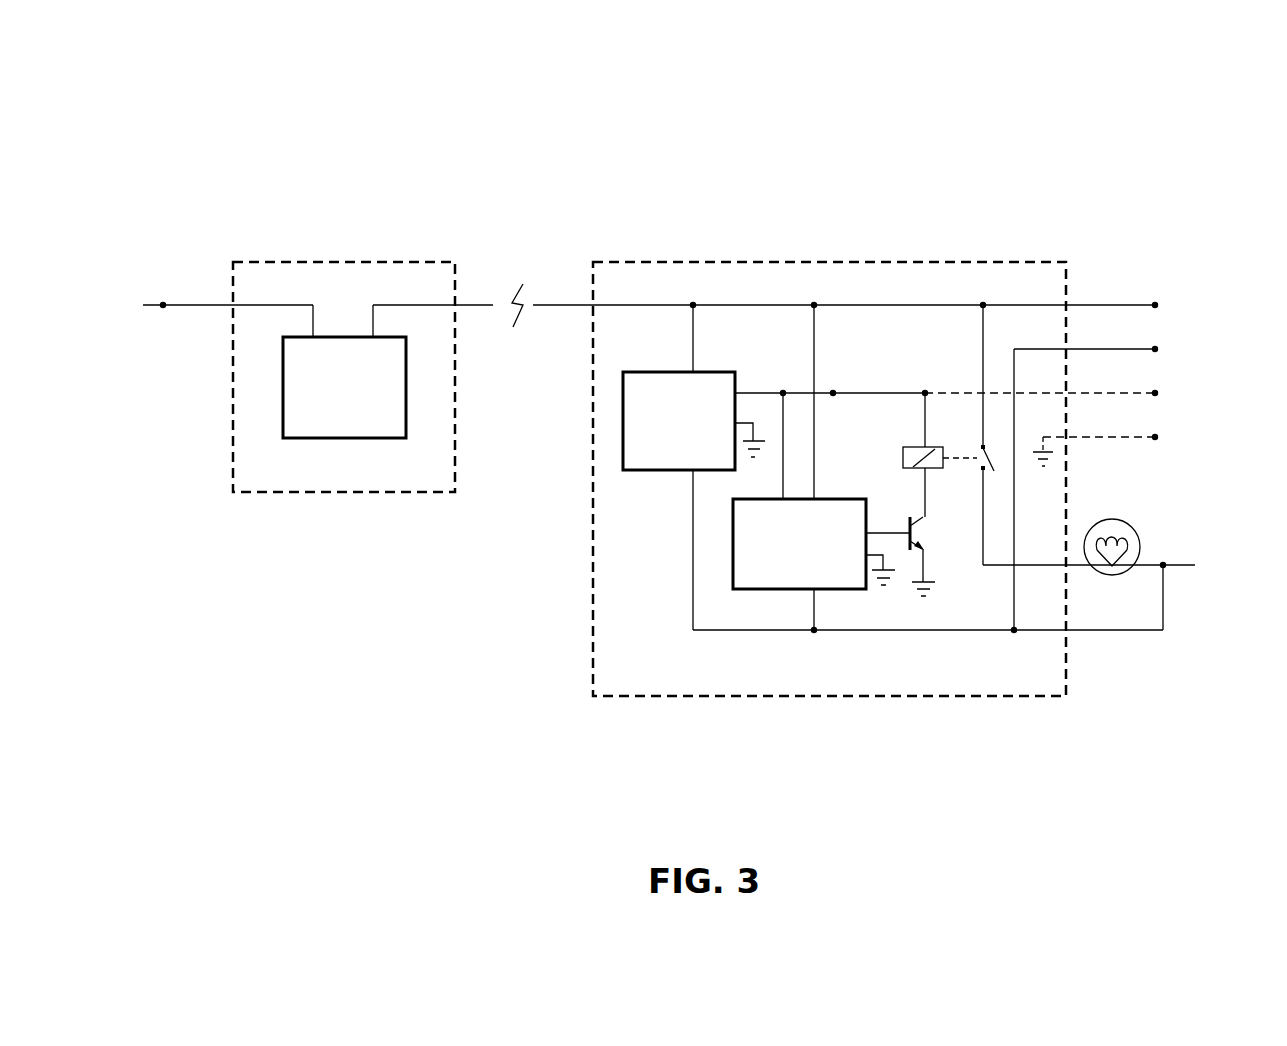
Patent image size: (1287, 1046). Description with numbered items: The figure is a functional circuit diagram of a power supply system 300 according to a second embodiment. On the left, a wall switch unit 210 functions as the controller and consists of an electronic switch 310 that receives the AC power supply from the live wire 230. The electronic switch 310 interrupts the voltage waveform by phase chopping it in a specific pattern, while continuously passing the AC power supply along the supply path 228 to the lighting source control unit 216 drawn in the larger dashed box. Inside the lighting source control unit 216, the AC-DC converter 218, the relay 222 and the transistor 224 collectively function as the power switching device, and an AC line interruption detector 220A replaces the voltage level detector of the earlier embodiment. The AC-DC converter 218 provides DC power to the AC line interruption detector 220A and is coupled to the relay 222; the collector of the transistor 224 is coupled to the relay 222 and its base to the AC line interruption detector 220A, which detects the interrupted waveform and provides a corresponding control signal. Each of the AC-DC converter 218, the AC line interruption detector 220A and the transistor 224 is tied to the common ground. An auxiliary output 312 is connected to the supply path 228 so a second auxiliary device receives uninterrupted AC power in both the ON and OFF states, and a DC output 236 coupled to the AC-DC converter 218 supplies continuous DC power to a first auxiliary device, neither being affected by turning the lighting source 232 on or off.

The power supply system 300 is at (618, 157).
The live wire 230 is at (187, 303).
The wall switch unit 210 is at (342, 262).
The electronic switch 310 is at (283, 430).
The supply path 228 is at (623, 303).
The lighting source control unit 216 is at (818, 262).
The AC-DC converter 218 is at (623, 448).
The AC line interruption detector 220A is at (733, 575).
The transistor 224 is at (910, 537).
The relay 222 is at (933, 467).
The auxiliary output 312 is at (1183, 320).
The DC output 236 is at (1187, 416).
The lighting source 232 is at (1110, 580).